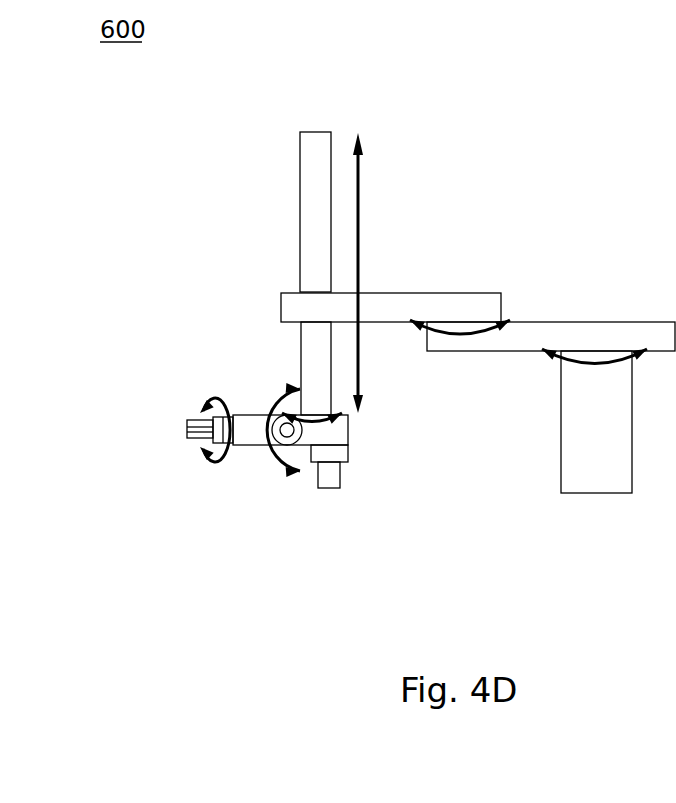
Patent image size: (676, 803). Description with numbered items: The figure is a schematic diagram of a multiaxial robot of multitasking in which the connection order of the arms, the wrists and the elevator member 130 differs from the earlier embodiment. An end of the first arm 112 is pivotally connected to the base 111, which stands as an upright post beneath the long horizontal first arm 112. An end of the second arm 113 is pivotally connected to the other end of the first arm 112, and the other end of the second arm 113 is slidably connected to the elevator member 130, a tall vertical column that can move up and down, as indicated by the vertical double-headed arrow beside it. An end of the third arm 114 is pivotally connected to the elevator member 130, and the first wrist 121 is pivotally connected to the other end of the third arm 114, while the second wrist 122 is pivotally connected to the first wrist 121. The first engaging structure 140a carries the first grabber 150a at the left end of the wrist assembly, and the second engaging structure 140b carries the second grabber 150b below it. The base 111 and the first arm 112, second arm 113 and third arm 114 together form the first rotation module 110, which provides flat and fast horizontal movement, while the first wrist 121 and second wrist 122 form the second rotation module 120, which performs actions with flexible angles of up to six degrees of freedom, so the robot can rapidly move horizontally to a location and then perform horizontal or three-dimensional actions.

The first rotation module 110 is at (548, 538).
The base 111 is at (579, 440).
The first arm 112 is at (482, 340).
The second arm 113 is at (389, 305).
The third arm 114 is at (333, 433).
The second rotation module 120 is at (277, 323).
The first wrist 121 is at (240, 425).
The second wrist 122 is at (224, 416).
The elevator member 130 is at (315, 177).
The first engaging structure 140a is at (218, 446).
The second engaging structure 140b is at (310, 458).
The first grabber 150a is at (198, 440).
The second grabber 150b is at (332, 477).